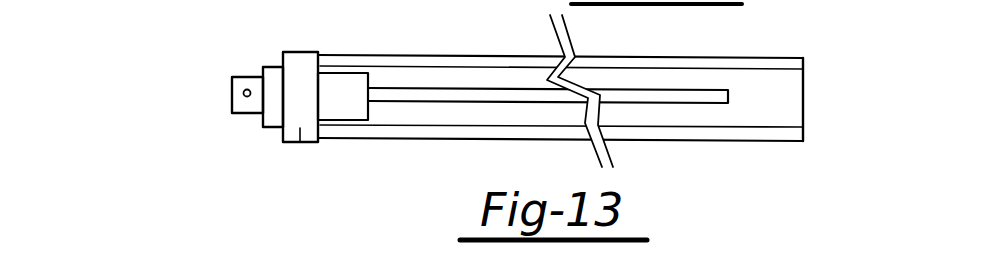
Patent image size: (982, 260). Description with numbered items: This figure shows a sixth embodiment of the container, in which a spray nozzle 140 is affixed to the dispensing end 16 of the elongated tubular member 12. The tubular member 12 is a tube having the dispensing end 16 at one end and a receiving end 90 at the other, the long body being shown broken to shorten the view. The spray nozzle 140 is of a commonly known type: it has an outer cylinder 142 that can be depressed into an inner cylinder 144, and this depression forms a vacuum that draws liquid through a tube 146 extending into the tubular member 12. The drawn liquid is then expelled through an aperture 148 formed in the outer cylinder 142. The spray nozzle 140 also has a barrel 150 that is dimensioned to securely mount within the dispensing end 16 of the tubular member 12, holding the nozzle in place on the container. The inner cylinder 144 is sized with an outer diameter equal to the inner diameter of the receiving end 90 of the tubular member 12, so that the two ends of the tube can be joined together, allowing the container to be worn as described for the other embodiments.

The tubular member 12 is at (479, 62).
The dispensing end 16 is at (335, 62).
The receiving end 90 is at (740, 63).
The spray nozzle 140 is at (308, 58).
The outer cylinder 142 is at (237, 106).
The inner cylinder 144 is at (273, 115).
The tube 146 is at (426, 95).
The aperture 148 is at (243, 96).
The barrel 150 is at (303, 128).